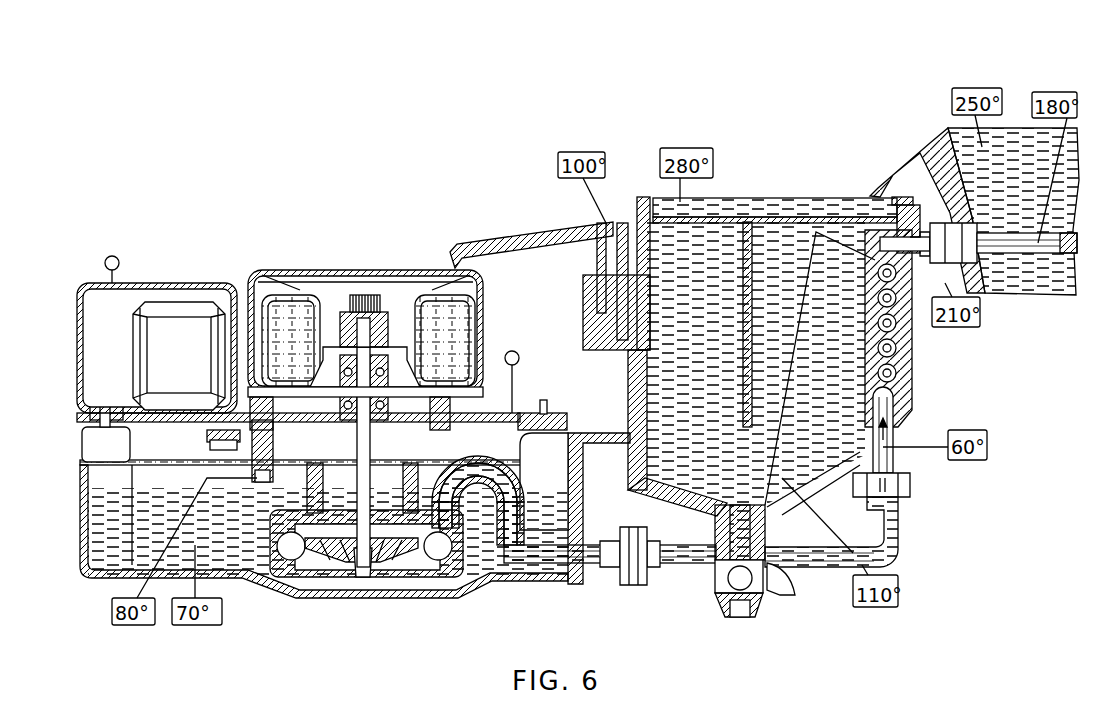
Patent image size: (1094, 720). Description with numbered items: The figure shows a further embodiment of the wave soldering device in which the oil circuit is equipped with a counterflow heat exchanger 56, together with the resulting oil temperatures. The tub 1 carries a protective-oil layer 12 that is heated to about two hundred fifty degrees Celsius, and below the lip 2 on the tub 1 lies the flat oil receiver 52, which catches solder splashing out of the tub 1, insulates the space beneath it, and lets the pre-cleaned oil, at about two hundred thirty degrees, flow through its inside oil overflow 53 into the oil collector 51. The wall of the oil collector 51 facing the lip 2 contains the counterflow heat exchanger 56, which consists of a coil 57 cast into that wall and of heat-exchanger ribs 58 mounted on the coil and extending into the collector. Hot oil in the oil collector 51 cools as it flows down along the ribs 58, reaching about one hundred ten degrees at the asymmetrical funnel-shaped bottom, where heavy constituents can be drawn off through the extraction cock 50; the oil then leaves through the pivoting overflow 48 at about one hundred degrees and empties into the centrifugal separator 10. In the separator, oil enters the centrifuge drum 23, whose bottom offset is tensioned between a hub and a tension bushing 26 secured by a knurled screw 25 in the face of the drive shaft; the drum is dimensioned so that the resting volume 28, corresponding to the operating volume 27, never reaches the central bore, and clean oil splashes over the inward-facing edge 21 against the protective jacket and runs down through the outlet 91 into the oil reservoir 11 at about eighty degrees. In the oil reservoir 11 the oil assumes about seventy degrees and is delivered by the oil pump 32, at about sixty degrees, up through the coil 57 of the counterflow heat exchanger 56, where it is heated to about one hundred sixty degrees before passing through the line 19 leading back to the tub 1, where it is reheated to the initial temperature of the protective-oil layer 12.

The tub 1 is at (977, 273).
The lip 2 is at (892, 175).
The centrifugal separator 10 is at (290, 253).
The oil reservoir 11 is at (418, 595).
The protective-oil layer 12 is at (947, 138).
The line 19 is at (1067, 253).
The inward-facing edge 21 is at (262, 272).
The centrifuge drum 23 is at (478, 335).
The knurled screw 25 is at (347, 295).
The tension bushing 26 is at (387, 300).
The operating volume 27 is at (297, 325).
The resting volume 28 is at (305, 333).
The oil pump 32 is at (308, 568).
The overflow 48 is at (497, 247).
The extraction cock 50 is at (758, 603).
The oil collector 51 is at (808, 455).
The oil receiver 52 is at (782, 217).
The oil overflow 53 is at (875, 207).
The counterflow heat exchanger 56 is at (903, 390).
The coil 57 is at (903, 348).
The heat-exchanger ribs 58 is at (816, 232).
The outlet 91 is at (220, 452).